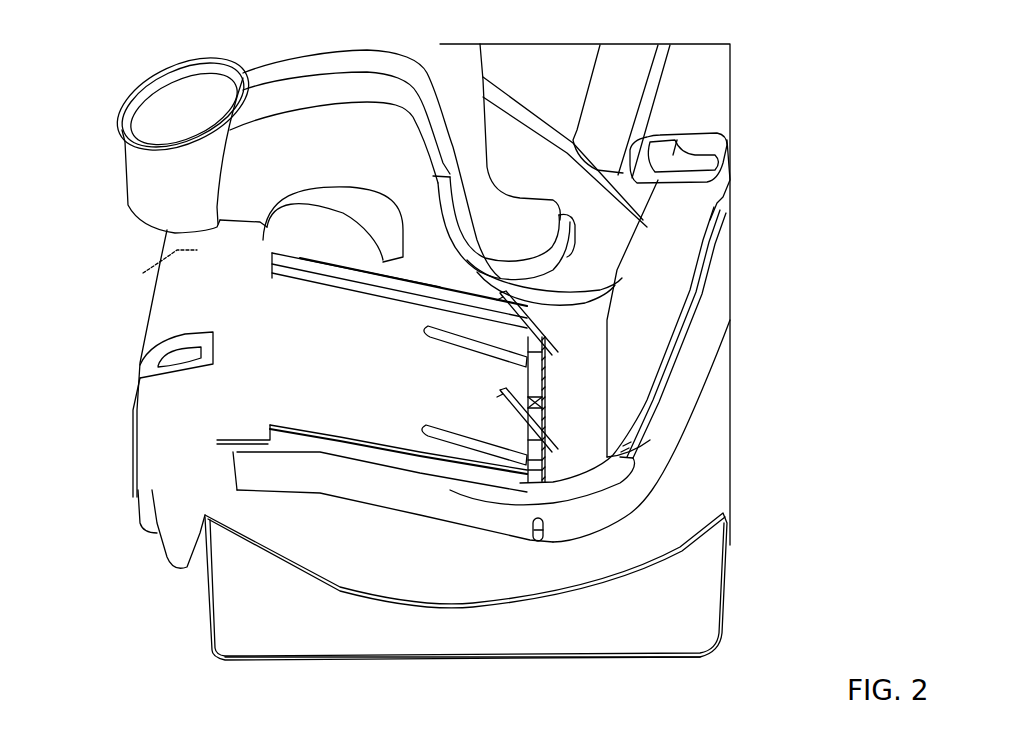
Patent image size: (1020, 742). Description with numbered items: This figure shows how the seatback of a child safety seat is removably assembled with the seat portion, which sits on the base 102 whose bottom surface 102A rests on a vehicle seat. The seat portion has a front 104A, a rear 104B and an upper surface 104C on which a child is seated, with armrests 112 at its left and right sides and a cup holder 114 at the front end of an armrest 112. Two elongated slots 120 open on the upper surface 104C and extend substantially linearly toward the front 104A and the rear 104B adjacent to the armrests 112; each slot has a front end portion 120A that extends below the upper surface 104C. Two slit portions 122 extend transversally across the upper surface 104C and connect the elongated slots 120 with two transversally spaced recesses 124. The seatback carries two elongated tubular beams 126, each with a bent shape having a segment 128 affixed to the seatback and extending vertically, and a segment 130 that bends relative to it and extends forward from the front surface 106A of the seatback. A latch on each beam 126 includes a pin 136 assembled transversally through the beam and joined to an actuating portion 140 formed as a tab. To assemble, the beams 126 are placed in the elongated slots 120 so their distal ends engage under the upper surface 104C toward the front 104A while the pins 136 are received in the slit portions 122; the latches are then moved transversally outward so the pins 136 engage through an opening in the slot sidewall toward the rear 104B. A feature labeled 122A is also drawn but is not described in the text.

The base 102 is at (725, 590).
The bottom surface 102A is at (425, 658).
The front 104A is at (118, 340).
The rear 104B is at (758, 492).
The upper surface 104C is at (160, 262).
The front surface 106A is at (688, 243).
The armrests 112 is at (286, 74).
The cup holder 114 is at (142, 178).
The elongated slots 120 is at (283, 420).
The front end portion 120A is at (249, 440).
The slit portions 122 is at (545, 432).
The slot 122A is at (550, 380).
The recesses 124 is at (424, 334).
The beams 126 is at (580, 308).
The segment 128 is at (707, 347).
The segment 130 is at (335, 575).
The pin 136 is at (543, 542).
The actuating portion 140 is at (505, 270).